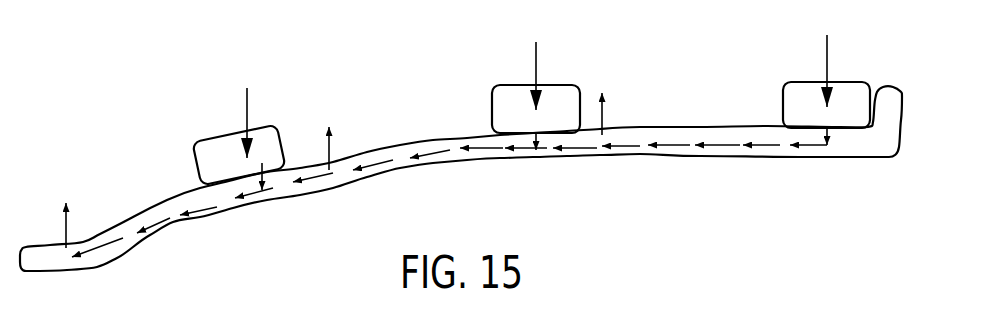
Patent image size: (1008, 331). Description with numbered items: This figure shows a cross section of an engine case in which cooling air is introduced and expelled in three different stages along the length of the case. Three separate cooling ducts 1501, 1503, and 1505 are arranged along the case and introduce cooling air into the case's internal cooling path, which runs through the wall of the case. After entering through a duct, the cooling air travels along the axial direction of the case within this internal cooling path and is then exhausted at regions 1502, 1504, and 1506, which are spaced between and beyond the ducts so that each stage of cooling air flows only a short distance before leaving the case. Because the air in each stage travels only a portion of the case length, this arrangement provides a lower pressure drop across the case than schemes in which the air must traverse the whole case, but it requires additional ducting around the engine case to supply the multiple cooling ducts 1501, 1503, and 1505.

The cooling duct 1501 is at (826, 52).
The cooling air exhaust region 1502 is at (606, 98).
The cooling duct 1503 is at (535, 58).
The cooling air exhaust region 1504 is at (333, 132).
The cooling duct 1505 is at (245, 102).
The cooling air exhaust region 1506 is at (72, 210).